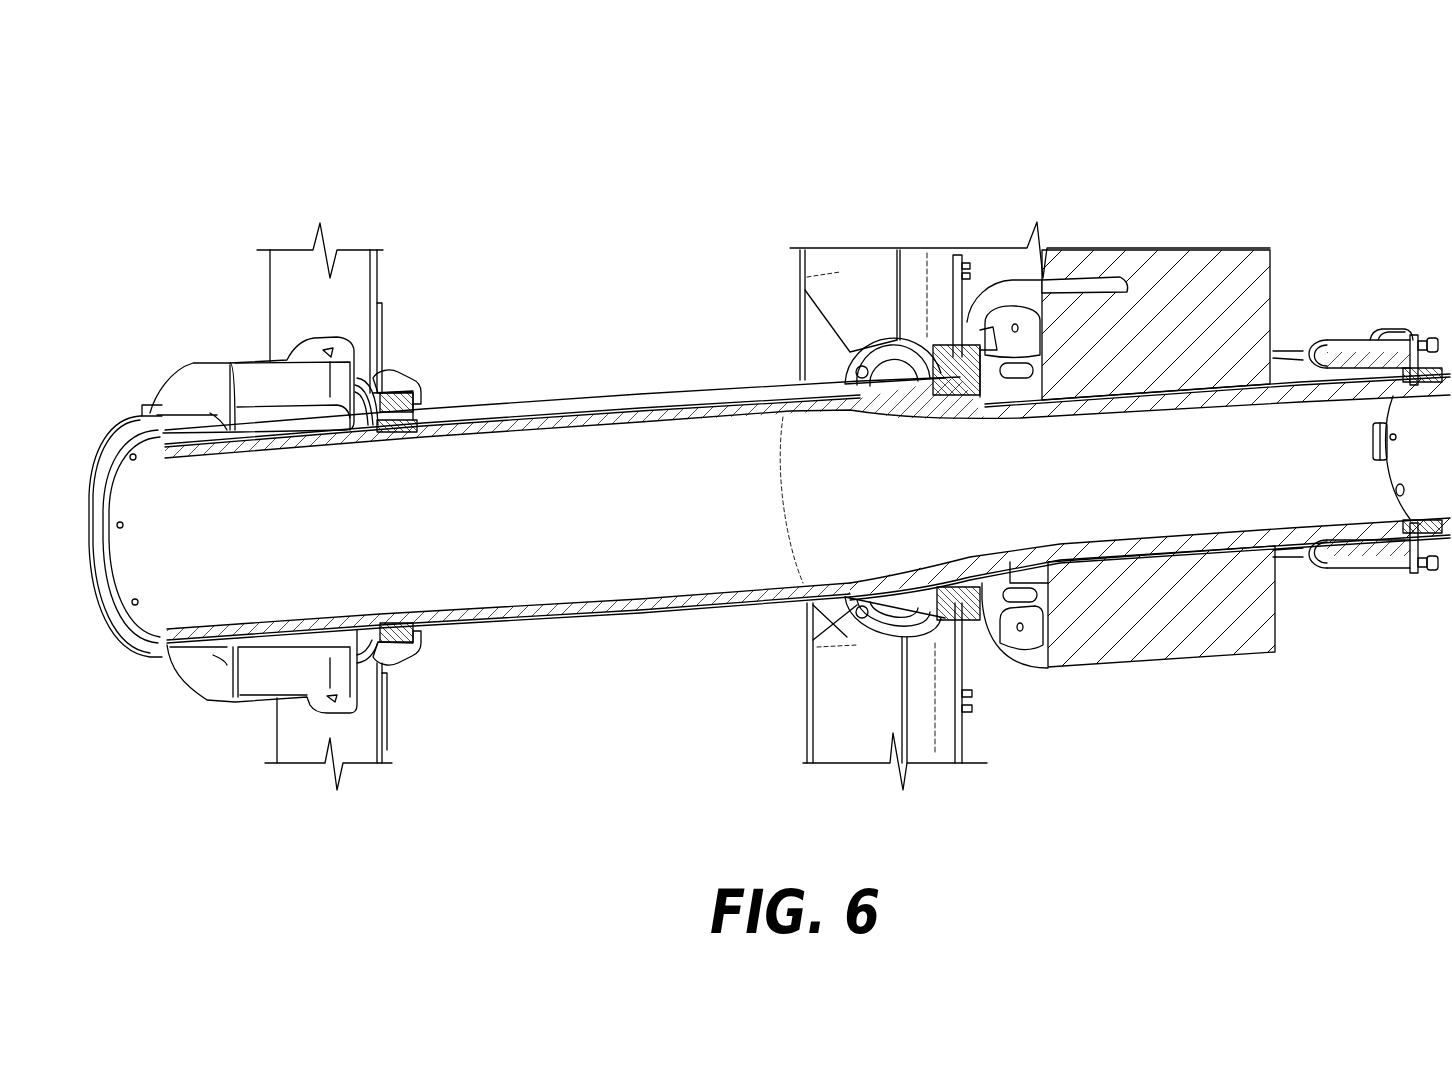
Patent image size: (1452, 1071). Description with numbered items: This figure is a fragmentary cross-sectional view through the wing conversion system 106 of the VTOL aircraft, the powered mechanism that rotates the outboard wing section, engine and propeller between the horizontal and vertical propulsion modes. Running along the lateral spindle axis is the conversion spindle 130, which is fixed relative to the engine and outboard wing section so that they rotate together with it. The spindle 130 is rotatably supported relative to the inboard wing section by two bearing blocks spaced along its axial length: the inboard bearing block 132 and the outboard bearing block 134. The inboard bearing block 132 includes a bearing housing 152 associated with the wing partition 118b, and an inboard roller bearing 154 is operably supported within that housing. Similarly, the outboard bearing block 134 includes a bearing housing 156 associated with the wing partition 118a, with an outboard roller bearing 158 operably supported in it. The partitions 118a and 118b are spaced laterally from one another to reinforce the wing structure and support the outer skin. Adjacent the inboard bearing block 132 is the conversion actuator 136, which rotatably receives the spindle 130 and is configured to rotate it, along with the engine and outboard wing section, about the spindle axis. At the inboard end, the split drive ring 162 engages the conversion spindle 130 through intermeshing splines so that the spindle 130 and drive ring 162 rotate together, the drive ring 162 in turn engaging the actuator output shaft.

The wing conversion system 106 is at (725, 397).
The conversion spindle 130 is at (613, 613).
The partition 118a is at (287, 290).
The partition 118b is at (848, 258).
The inboard bearing block 132 is at (908, 350).
The outboard bearing block 134 is at (385, 375).
The conversion actuator 136 is at (1132, 643).
The bearing housing 152 is at (942, 353).
The inboard roller bearing 154 is at (980, 650).
The bearing housing 156 is at (400, 390).
The outboard roller bearing 158 is at (407, 657).
The split drive ring 162 is at (1307, 343).